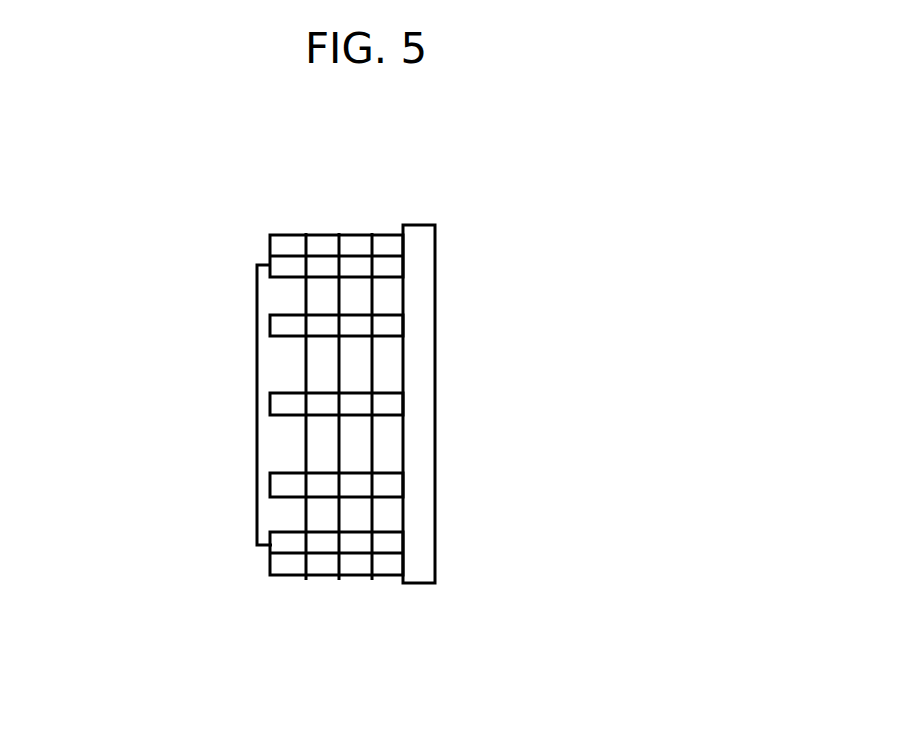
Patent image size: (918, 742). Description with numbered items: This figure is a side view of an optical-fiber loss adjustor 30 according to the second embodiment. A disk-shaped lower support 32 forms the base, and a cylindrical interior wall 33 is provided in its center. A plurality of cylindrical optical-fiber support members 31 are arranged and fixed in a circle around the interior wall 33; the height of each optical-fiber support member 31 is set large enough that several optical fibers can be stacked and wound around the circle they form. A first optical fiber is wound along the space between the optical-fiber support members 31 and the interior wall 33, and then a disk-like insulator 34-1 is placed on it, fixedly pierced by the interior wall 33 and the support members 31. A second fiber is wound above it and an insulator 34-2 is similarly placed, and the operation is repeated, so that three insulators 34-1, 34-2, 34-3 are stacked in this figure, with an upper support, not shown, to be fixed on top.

The optical-fiber support assembly 30 is at (425, 140).
The optical-fiber support member 31 is at (272, 248).
The lower support 32 is at (420, 282).
The interior wall 33 is at (257, 493).
The insulator 34-1 is at (371, 228).
The insulator 34-2 is at (338, 228).
The insulator 34-3 is at (305, 229).